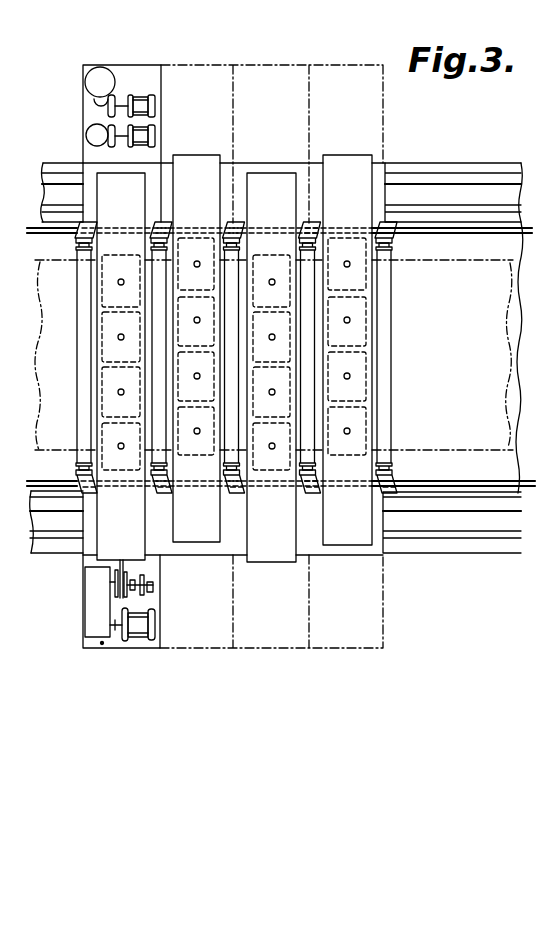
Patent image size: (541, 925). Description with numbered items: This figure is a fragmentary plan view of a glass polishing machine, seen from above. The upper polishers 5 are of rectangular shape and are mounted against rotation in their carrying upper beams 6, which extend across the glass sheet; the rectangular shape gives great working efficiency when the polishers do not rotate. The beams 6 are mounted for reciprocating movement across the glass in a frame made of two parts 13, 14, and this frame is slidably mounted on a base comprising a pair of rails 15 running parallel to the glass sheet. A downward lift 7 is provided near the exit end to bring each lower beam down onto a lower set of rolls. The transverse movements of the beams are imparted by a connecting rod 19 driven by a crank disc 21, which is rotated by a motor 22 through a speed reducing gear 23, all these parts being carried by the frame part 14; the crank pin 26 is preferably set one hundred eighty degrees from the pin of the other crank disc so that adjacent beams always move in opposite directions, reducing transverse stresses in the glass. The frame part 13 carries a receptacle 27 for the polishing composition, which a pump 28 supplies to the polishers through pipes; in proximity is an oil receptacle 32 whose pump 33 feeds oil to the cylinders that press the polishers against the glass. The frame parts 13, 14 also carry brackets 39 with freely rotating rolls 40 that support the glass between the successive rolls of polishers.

The upper polishers 5 is at (360, 368).
The upper beams 6 is at (247, 583).
The downward lift 7 is at (507, 237).
The frame part 13 is at (90, 178).
The frame part 14 is at (92, 542).
The rails 15 is at (477, 550).
The connecting rod 19 is at (124, 565).
The crank disc 21 is at (113, 575).
The motor 22 is at (140, 633).
The speed reducing gear 23 is at (92, 612).
The crank pin 26 is at (127, 598).
The receptacle 27 is at (96, 78).
The pump 28 is at (113, 98).
The oil receptacle 32 is at (86, 133).
The pump 33 is at (110, 131).
The brackets 39 is at (78, 229).
The freely rotating rolls 40 is at (83, 307).